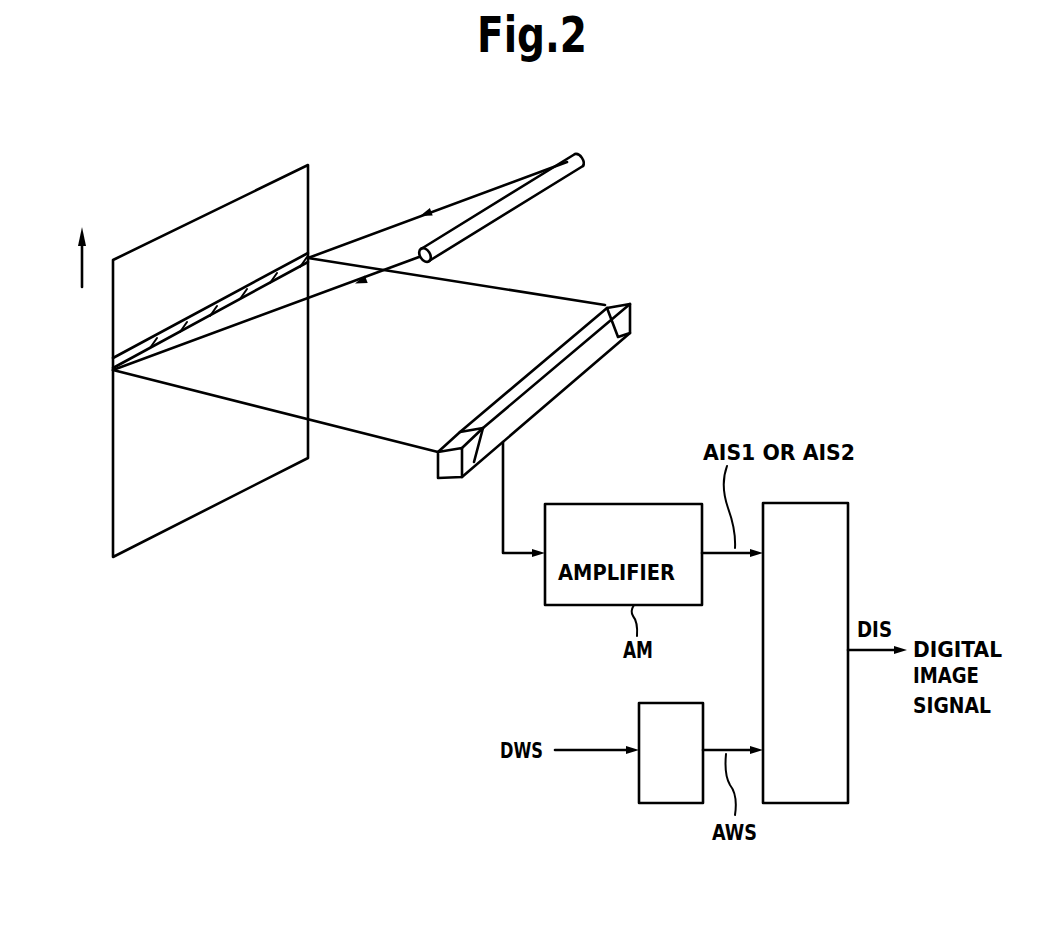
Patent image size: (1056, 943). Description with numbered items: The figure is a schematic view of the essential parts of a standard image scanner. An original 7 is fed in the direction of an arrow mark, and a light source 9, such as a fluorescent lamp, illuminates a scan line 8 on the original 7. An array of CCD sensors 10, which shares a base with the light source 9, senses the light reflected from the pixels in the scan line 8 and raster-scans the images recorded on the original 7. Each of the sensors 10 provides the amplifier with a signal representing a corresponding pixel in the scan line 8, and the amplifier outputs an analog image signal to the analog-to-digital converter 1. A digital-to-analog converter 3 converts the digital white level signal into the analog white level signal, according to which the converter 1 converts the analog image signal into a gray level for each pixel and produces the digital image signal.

The analog-to-digital converter 1 is at (850, 503).
The digital-to-analog converter 3 is at (665, 803).
The original 7 is at (296, 186).
The scan line 8 is at (226, 297).
The light source 9 is at (565, 170).
The array of CCD sensors 10 is at (608, 352).